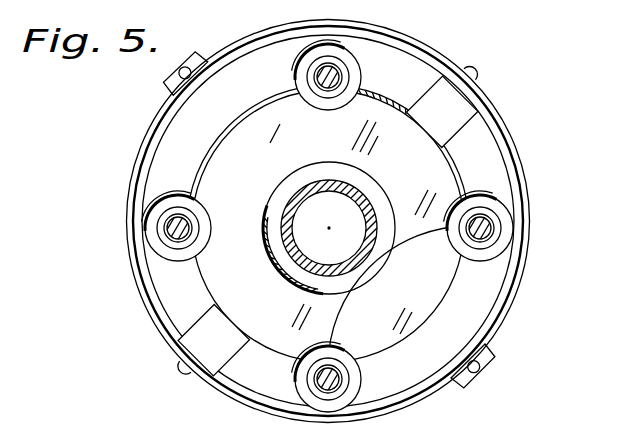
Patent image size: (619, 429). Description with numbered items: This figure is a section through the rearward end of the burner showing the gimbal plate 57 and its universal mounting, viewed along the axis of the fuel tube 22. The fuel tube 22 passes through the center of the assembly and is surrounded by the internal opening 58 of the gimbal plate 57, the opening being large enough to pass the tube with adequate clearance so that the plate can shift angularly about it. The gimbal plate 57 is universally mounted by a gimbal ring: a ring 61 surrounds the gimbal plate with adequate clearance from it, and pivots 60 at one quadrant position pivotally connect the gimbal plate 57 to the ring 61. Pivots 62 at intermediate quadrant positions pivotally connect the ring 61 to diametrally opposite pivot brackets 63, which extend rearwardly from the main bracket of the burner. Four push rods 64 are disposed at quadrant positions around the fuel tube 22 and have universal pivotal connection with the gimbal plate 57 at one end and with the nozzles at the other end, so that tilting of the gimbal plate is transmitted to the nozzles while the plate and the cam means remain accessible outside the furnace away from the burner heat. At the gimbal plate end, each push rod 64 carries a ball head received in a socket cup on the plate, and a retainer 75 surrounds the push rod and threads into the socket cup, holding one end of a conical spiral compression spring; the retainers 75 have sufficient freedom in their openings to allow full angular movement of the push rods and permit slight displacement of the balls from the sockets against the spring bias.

The fuel tube 22 is at (359, 209).
The gimbal plate 57 is at (328, 226).
The internal opening 58 is at (388, 210).
The pivots 60 is at (476, 74).
The ring 61 is at (520, 284).
The pivots 62 is at (188, 67).
The pivot brackets 63 is at (166, 84).
The push rods 64 is at (497, 225).
The retainers 75 is at (496, 206).